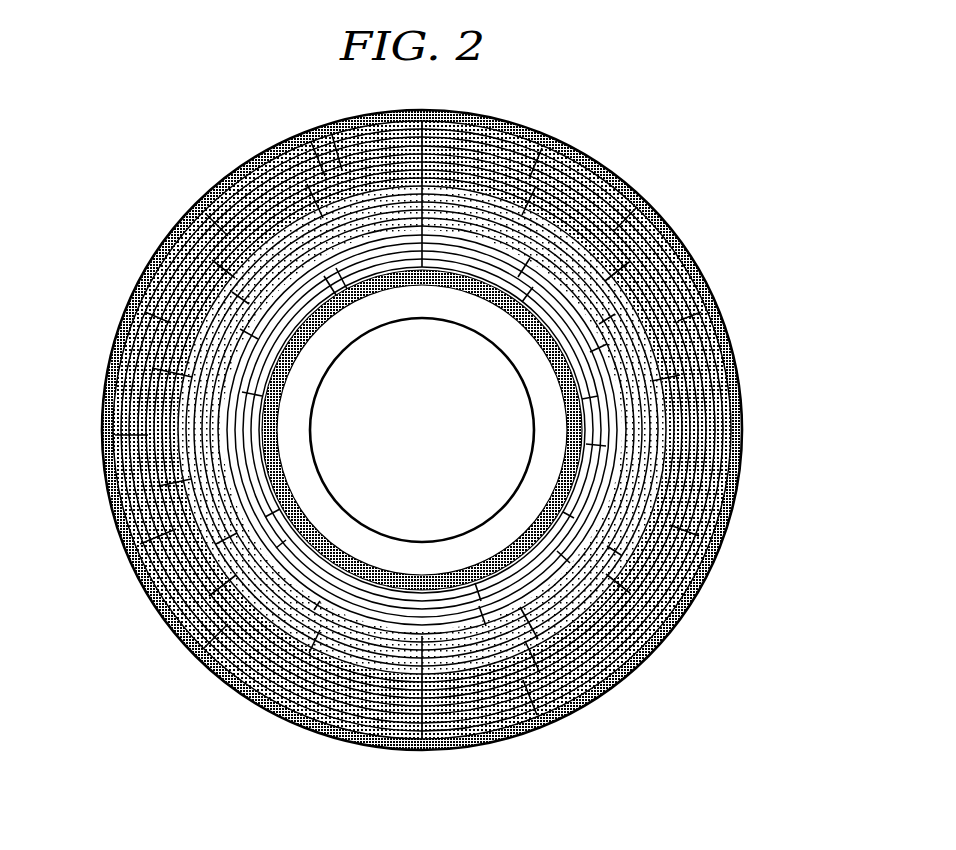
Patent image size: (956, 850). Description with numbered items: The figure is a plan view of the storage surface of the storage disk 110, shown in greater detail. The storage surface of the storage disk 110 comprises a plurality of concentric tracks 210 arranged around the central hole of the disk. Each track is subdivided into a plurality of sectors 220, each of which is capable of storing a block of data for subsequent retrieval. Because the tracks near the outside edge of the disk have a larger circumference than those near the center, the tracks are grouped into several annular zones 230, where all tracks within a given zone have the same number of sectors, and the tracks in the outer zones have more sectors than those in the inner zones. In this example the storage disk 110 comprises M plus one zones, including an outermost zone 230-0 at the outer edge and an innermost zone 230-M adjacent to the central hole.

The storage disk 110 is at (160, 185).
The concentric tracks 210 is at (608, 650).
The sectors 220 is at (560, 128).
The annular zones 230 is at (653, 478).
The outermost zone 230-0 is at (306, 133).
The innermost zone 230-M is at (348, 295).